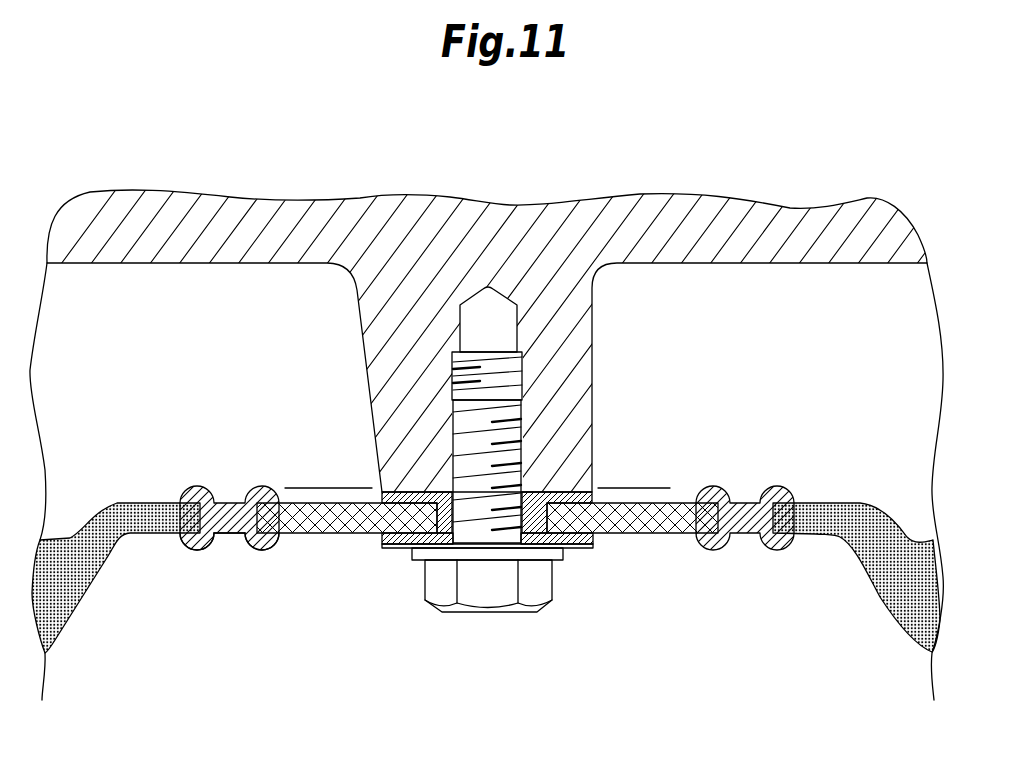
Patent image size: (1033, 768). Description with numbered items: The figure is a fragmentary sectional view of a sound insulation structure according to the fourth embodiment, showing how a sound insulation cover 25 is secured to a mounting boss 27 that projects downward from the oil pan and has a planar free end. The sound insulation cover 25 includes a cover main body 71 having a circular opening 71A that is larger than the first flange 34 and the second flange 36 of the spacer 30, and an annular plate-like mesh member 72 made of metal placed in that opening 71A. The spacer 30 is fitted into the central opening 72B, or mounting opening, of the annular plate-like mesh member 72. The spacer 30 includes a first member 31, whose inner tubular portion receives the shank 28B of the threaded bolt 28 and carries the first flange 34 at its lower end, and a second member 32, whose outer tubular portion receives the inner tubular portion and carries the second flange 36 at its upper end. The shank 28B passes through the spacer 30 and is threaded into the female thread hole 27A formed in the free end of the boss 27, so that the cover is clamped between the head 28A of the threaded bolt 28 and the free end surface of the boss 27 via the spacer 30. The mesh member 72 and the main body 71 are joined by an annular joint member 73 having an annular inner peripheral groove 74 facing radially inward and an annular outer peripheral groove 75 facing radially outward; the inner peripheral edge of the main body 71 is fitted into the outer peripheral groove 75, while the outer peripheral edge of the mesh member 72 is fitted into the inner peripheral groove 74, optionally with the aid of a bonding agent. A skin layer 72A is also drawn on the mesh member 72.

The sound insulation cover 25 is at (78, 648).
The mounting boss 27 is at (577, 343).
The female thread hole 27A is at (517, 374).
The threaded bolt 28 is at (470, 624).
The head 28A is at (502, 598).
The shank 28B is at (525, 441).
The spacer 30 is at (385, 560).
The first member 31 is at (575, 548).
The second member 32 is at (564, 492).
The first flange 34 is at (403, 547).
The second flange 36 is at (395, 500).
The cover main body 71 is at (80, 618).
The opening 71A is at (220, 503).
The annular plate-like mesh member 72 is at (622, 533).
The skin layer 72A is at (670, 488).
The central opening 72B is at (446, 507).
The annular joint member 73 is at (230, 550).
The annular inner peripheral groove 74 is at (270, 550).
The annular outer peripheral groove 75 is at (186, 548).